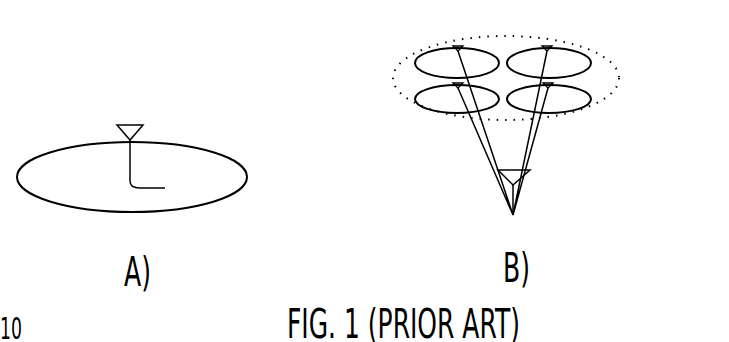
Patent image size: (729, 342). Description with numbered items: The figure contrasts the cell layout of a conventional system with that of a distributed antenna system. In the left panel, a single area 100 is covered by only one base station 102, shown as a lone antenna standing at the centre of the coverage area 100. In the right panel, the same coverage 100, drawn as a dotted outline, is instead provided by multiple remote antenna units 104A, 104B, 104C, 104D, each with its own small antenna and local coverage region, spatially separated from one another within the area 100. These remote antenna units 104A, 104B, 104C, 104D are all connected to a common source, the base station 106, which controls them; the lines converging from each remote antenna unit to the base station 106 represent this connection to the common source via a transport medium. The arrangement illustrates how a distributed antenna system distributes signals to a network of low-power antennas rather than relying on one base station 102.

The coverage area 100 is at (210, 203).
The base station 102 is at (158, 162).
The remote antenna unit 104A is at (457, 110).
The remote antenna unit 104B is at (453, 60).
The remote antenna unit 104C is at (553, 63).
The remote antenna unit 104D is at (553, 110).
The base station 106 is at (513, 215).